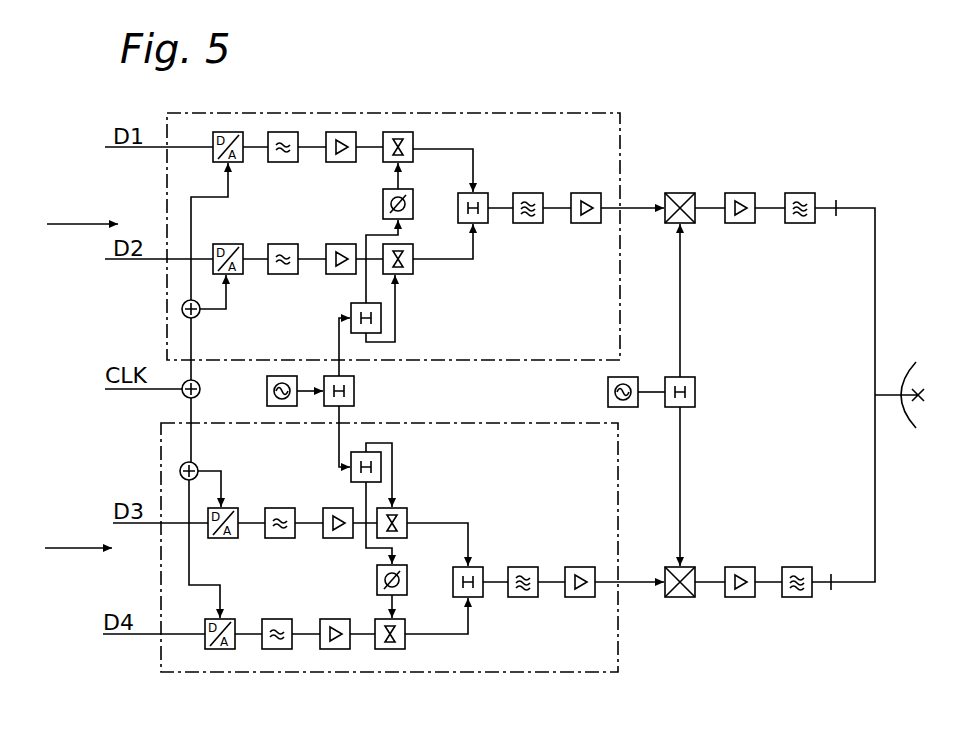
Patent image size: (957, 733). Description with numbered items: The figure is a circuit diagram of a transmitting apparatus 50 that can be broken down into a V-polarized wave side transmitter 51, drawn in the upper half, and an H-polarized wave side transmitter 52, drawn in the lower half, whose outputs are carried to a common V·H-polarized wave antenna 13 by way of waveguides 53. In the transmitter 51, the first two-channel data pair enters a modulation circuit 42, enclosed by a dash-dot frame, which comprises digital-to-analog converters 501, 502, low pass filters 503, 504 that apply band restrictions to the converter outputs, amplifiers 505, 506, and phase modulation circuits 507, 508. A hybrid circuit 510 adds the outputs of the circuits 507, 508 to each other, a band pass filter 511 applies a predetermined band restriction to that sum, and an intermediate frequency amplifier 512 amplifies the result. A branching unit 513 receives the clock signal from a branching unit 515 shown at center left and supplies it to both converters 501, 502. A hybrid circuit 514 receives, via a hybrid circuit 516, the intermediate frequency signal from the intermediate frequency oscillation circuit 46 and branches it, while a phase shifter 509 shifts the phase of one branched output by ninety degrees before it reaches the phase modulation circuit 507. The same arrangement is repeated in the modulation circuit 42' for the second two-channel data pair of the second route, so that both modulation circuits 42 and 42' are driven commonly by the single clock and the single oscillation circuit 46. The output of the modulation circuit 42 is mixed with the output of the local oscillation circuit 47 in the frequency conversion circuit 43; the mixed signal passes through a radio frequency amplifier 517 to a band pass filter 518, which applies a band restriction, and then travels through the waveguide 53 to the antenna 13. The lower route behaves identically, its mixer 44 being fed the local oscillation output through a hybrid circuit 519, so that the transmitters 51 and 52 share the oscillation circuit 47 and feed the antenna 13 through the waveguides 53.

The transmitting apparatus 50 is at (458, 62).
The V-polarized wave side transmitter 51 is at (67, 224).
The H-polarized wave side transmitter 52 is at (60, 550).
The modulation circuit 42 is at (393, 218).
The modulation circuit 42' is at (389, 527).
The frequency conversion circuit 43 is at (682, 193).
The modulation circuit 44 is at (676, 598).
The intermediate frequency oscillation circuit 46 is at (266, 388).
The local oscillation circuit 47 is at (605, 395).
The waveguide 53 is at (878, 285).
The common V·H-polarized wave antenna 13 is at (906, 374).
The digital-to-analog converter 501 is at (227, 132).
The digital-to-analog converter 502 is at (230, 244).
The low pass filter 503 is at (282, 132).
The low pass filter 504 is at (282, 244).
The amplifier 505 is at (341, 132).
The amplifier 506 is at (341, 244).
The phase modulation circuit 507 is at (405, 132).
The phase modulation circuit 508 is at (408, 274).
The phase shifter 509 is at (408, 189).
The hybrid circuit 510 is at (480, 192).
The band pass filter 511 is at (535, 184).
The intermediate frequency amplifier 512 is at (590, 193).
The branching unit 513 is at (199, 316).
The hybrid circuit 514 is at (351, 314).
The branching unit 515 is at (184, 396).
The hybrid circuit 516 is at (355, 390).
The radio frequency amplifier 517 is at (742, 193).
The band pass filter 518 is at (800, 193).
The hybrid circuit 519 is at (697, 393).